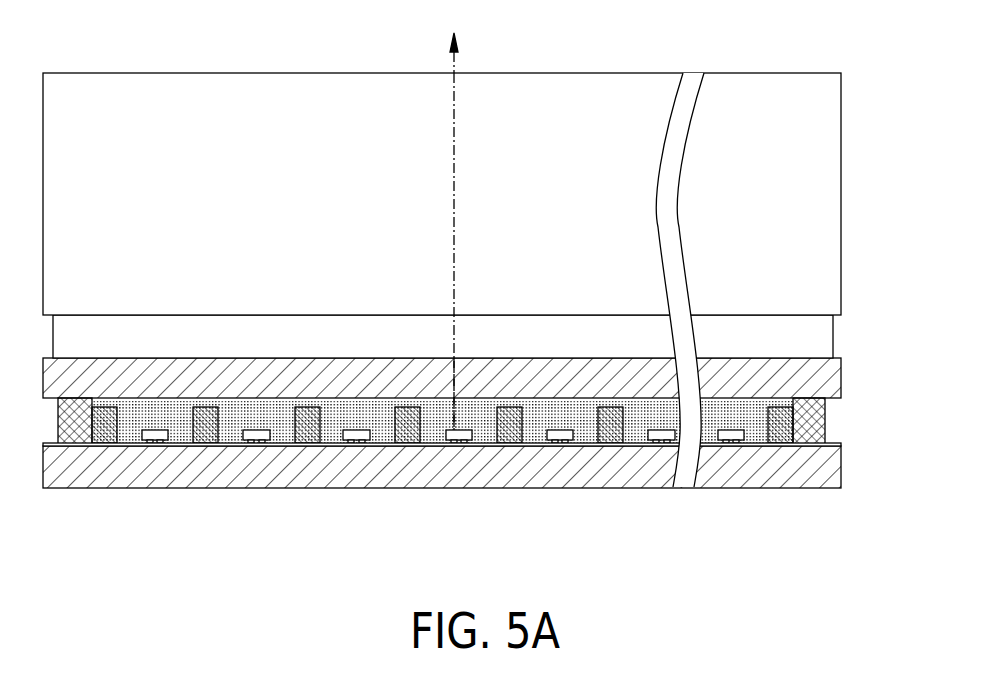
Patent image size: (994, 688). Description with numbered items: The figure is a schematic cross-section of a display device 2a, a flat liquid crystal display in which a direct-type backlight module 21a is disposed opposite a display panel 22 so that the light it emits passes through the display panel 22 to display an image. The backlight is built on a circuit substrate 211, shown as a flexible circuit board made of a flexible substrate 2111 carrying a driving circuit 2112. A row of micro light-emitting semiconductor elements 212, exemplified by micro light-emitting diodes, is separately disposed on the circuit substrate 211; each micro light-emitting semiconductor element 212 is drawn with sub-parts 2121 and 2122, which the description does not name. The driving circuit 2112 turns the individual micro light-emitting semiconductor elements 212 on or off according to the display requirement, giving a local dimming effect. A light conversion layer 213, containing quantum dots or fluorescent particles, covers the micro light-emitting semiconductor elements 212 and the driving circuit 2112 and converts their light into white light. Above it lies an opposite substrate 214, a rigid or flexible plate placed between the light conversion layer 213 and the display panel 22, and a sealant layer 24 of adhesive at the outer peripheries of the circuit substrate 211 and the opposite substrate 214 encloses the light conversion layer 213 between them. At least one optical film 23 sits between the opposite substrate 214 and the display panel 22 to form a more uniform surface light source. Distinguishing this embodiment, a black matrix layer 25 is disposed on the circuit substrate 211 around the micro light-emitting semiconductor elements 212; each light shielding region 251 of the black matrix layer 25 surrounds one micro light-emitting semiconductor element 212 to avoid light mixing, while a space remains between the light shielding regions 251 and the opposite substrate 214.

The display device 2a is at (146, 45).
The display panel 22 is at (812, 222).
The backlight module 21a is at (837, 331).
The optical film 23 is at (815, 345).
The opposite substrate 214 is at (812, 386).
The sealant layer 24 is at (822, 425).
The light conversion layer 213 is at (335, 432).
The micro light-emitting semiconductor element 212 is at (408, 483).
The electrode bump 2121 is at (150, 443).
The chip body 2122 is at (164, 440).
The circuit substrate 211 is at (442, 511).
The flexible substrate 2111 is at (437, 460).
The driving circuit 2112 is at (487, 446).
The light shielding region 251 is at (611, 443).
The black matrix layer 25 is at (442, 472).